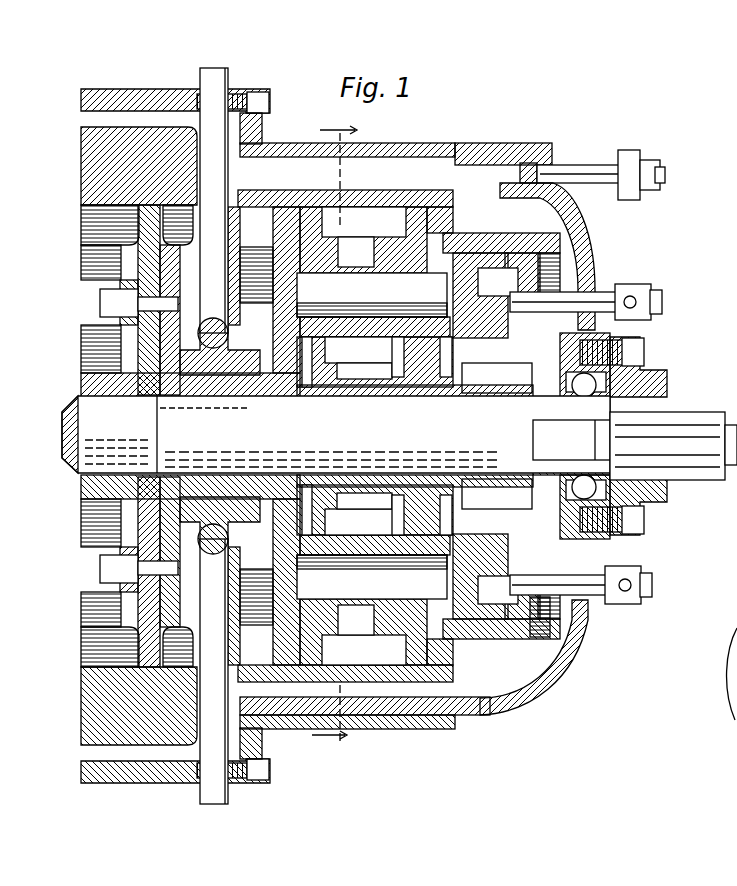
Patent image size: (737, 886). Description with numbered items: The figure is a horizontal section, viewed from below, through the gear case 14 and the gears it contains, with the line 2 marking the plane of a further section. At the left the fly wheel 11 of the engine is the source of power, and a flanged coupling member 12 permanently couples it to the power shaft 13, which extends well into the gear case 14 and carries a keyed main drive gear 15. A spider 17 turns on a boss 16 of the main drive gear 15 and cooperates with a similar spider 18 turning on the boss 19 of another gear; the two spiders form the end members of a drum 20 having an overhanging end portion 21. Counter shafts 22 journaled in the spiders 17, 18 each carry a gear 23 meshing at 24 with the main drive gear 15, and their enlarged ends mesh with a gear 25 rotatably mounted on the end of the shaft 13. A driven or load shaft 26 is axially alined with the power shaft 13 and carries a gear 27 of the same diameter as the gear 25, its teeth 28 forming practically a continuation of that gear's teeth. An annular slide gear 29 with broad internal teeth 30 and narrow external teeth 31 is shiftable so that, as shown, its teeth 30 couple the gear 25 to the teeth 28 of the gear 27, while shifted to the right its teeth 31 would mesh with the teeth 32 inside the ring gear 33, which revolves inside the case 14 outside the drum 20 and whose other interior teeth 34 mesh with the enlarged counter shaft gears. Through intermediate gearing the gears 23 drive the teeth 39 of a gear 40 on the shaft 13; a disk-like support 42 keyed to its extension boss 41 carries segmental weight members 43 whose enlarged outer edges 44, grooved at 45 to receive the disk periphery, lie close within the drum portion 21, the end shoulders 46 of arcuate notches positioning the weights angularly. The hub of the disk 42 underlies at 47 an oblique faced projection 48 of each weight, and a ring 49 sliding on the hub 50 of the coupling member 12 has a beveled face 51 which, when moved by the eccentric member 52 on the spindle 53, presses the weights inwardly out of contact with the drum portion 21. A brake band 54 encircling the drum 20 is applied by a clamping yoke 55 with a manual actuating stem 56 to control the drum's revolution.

The section line 2- 2 is at (334, 436).
The fly wheel 11 is at (95, 170).
The flanged coupling member 12 is at (145, 348).
The power shaft 13 is at (162, 434).
The gear case 14 is at (432, 150).
The main drive gear 15 is at (382, 395).
The boss 16 is at (440, 395).
The spider 17 is at (415, 395).
The spider 18 is at (292, 434).
The boss 19 is at (292, 395).
The drum 20 is at (370, 207).
The overhanging end portion 21 is at (270, 205).
The counter shafts 22 is at (352, 285).
The counter shaft gear 23 is at (395, 330).
The meshing teeth 24 is at (395, 382).
The gear 25 is at (478, 397).
The load shaft 26 is at (700, 422).
The gear 27 is at (395, 575).
The teeth 28 is at (548, 345).
The annular slide gear 29 is at (510, 270).
The internal teeth 30 is at (510, 540).
The external teeth 31 is at (512, 245).
The ring gear teeth 32 is at (552, 270).
The ring gear 33 is at (575, 218).
The interior teeth 34 is at (465, 245).
The teeth 39 is at (348, 368).
The gear 40 is at (340, 398).
The extension boss 41 is at (272, 397).
The disk-like support 42 is at (228, 327).
The weight members 43 is at (250, 268).
The enlarged outer edge 44 is at (248, 190).
The groove 45 is at (300, 200).
The end shoulders 46 is at (726, 704).
The outer surface of hub portion 47 is at (250, 392).
The oblique faced projection 48 is at (255, 372).
The ring 49 is at (200, 392).
The hub 50 is at (200, 470).
The beveled face 51 is at (225, 392).
The eccentric member 52 is at (213, 320).
The spindle 53 is at (230, 78).
The brake band 54 is at (430, 195).
The clamping yoke 55 is at (505, 160).
The actuating stem 56 is at (585, 170).